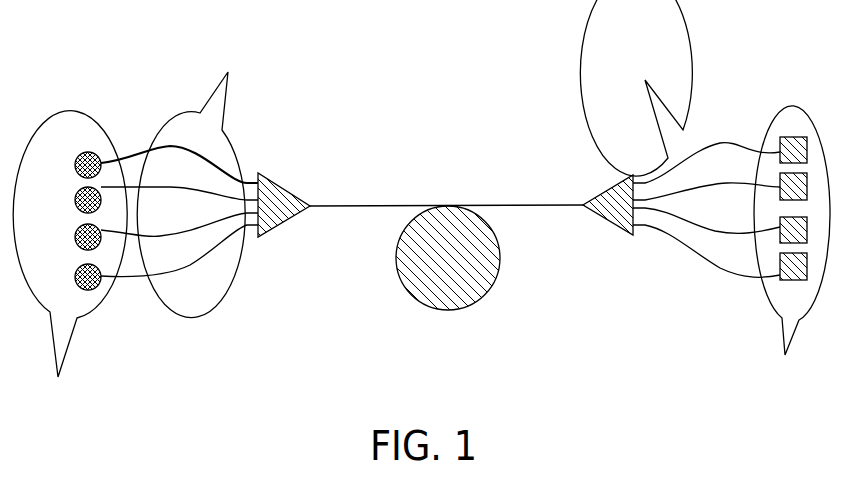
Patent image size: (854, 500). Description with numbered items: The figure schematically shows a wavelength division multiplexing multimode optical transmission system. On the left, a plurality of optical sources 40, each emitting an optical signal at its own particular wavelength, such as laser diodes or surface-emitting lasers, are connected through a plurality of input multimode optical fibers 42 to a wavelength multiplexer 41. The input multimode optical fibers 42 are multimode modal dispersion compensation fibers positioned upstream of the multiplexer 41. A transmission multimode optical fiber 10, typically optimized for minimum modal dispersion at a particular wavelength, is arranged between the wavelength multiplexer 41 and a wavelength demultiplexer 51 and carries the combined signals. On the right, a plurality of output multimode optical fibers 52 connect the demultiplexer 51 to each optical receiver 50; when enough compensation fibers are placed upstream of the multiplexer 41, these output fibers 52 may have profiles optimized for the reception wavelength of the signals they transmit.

The transmission multimode optical fiber 10 is at (437, 193).
The optical source 40 is at (70, 263).
The wavelength multiplexer 41 is at (277, 247).
The input multimode optical fiber 42 is at (179, 172).
The optical receiver 50 is at (747, 248).
The wavelength demultiplexer 51 is at (617, 247).
The output multimode optical fiber 52 is at (680, 138).